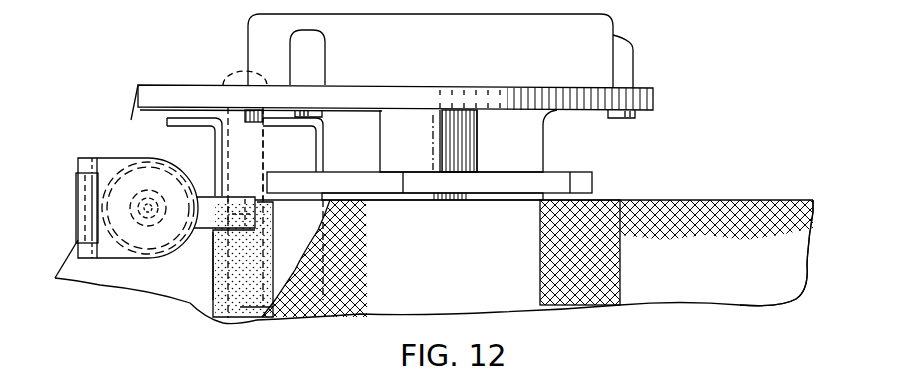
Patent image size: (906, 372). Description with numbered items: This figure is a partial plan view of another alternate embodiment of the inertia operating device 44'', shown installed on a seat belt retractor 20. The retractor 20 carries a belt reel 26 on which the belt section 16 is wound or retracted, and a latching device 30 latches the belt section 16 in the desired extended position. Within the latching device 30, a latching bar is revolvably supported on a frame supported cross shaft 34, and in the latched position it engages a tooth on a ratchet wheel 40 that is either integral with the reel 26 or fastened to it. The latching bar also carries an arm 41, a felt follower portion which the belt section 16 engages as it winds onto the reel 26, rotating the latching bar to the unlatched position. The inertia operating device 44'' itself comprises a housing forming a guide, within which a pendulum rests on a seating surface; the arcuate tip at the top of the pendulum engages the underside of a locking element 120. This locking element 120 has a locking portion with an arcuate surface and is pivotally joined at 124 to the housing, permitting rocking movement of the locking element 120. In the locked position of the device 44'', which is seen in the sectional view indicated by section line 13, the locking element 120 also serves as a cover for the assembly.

The section line 13- 13 is at (35, 230).
The belt section 16 is at (742, 200).
The retractor 20 is at (647, 199).
The belt reel 26 is at (462, 147).
The latching device 30 is at (212, 301).
The cross shaft 34 is at (262, 160).
The ratchet wheel 40 is at (569, 166).
The arm 41 is at (212, 259).
The inertia operating device 44'' is at (171, 254).
The locking element 120 is at (137, 158).
The pivot 124 is at (89, 157).